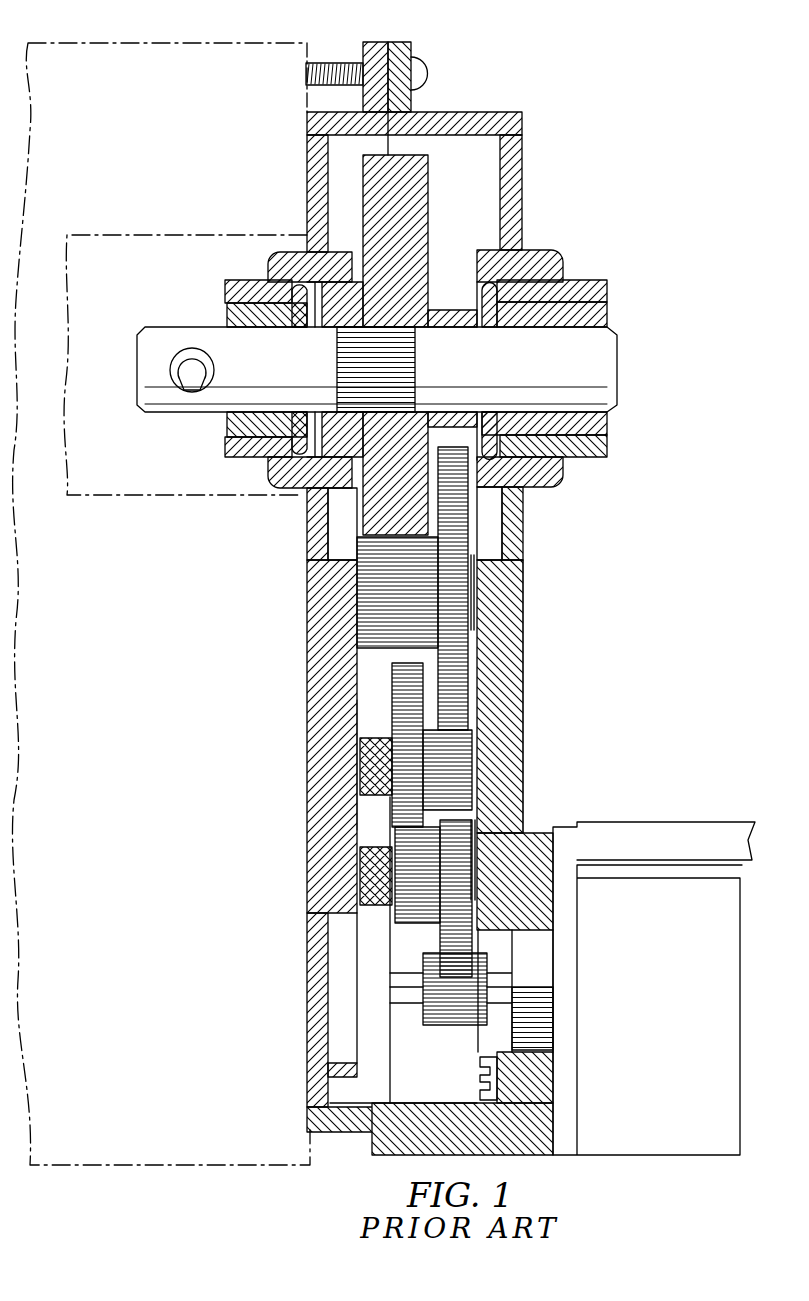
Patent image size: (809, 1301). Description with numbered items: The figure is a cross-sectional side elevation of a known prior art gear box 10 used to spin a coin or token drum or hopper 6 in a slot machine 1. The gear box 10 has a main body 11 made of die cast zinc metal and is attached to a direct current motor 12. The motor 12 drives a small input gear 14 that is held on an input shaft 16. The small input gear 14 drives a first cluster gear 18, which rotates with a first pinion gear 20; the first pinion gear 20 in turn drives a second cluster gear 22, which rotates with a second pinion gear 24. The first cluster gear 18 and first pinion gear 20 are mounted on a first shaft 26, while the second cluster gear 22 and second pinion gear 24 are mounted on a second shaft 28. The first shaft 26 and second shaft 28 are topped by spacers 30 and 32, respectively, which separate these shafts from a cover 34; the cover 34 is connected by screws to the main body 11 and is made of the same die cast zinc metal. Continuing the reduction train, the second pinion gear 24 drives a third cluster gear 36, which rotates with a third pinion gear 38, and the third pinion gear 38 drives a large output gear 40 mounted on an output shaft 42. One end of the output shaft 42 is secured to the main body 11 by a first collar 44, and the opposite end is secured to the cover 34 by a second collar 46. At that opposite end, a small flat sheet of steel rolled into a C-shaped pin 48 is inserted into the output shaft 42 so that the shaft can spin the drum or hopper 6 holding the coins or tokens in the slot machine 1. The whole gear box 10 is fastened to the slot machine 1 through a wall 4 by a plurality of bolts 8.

The slot machine 1 is at (175, 46).
The wall 4 is at (307, 45).
The drum or hopper 6 is at (158, 235).
The bolts 8 is at (336, 63).
The gear box 10 is at (541, 622).
The main body 11 is at (523, 545).
The direct current (D.C.) motor 12 is at (652, 1002).
The small input gear 14 is at (430, 1025).
The input shaft 16 is at (500, 978).
The first cluster gear 18 is at (440, 937).
The first pinion gear 20 is at (400, 925).
The second cluster gear 22 is at (390, 730).
The second pinion gear 24 is at (470, 810).
The first shaft 26 is at (472, 845).
The second shaft 28 is at (476, 740).
The spacer 30 is at (365, 847).
The spacer 32 is at (365, 797).
The cover 34 is at (328, 758).
The third cluster gear 36 is at (485, 515).
The third pinion gear 38 is at (378, 650).
The large output gear 40 is at (340, 512).
The output shaft 42 is at (172, 413).
The first collar 44 is at (607, 425).
The second collar 46 is at (228, 315).
The C-shaped pin 48 is at (170, 372).